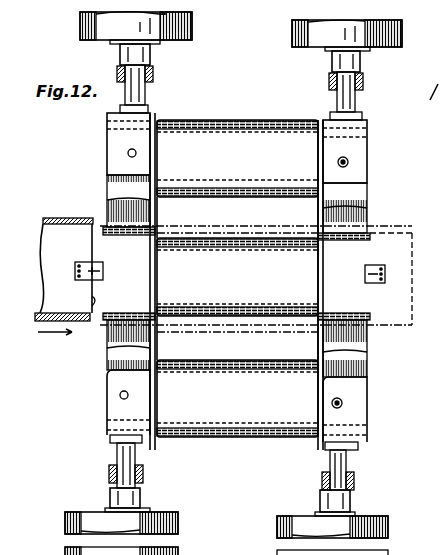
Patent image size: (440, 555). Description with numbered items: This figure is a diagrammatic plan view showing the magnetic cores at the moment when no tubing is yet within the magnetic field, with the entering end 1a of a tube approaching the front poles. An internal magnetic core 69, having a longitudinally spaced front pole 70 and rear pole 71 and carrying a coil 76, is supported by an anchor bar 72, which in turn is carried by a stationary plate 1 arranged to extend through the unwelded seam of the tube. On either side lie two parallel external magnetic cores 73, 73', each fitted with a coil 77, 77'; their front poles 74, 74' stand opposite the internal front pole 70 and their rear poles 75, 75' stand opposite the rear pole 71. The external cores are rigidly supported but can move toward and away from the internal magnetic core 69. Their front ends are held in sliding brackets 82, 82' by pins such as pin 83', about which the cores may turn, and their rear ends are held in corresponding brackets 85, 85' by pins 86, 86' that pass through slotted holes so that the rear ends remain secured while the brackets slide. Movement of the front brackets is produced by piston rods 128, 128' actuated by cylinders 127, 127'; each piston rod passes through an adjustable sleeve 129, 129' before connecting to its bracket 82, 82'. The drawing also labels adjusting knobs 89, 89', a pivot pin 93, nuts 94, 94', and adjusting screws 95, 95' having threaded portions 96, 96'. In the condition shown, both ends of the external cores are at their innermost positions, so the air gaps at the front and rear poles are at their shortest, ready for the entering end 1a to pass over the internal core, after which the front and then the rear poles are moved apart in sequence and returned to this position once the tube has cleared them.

The stationary plate 1 is at (50, 220).
The entering end 1a is at (92, 302).
The internal magnetic core 69 is at (263, 230).
The front pole 70 is at (104, 230).
The rear pole 71 is at (356, 238).
The anchor bar 72 is at (80, 265).
The external magnetic core 73 is at (237, 147).
The external magnetic core 73' is at (237, 412).
The front pole 74 is at (106, 201).
The front pole 74' is at (105, 355).
The rear pole 75 is at (363, 208).
The rear pole 75' is at (363, 352).
The coil 76 is at (210, 236).
The coil 77 is at (237, 138).
The coil 77' is at (237, 418).
The bracket 82 is at (107, 140).
The bracket 82' is at (105, 409).
The pin 83' is at (91, 398).
The bracket 85 is at (367, 143).
The bracket 85' is at (363, 418).
The pin 86 is at (372, 157).
The pin 86' is at (366, 412).
The adjusting knob 89 is at (329, 33).
The adjusting knob 89' is at (311, 525).
The pivot pin 93 is at (128, 153).
The nut 94 is at (367, 61).
The nut 94' is at (358, 501).
The adjusting screw 95 is at (366, 92).
The adjusting screw 95' is at (361, 470).
The threaded portion 96 is at (330, 79).
The threaded portion 96' is at (320, 482).
The cylinder 127 is at (116, 23).
The cylinder 127' is at (102, 519).
The piston rod 128 is at (112, 53).
The piston rod 128' is at (99, 492).
The adjustable sleeve 129 is at (157, 81).
The adjustable sleeve 129' is at (151, 465).